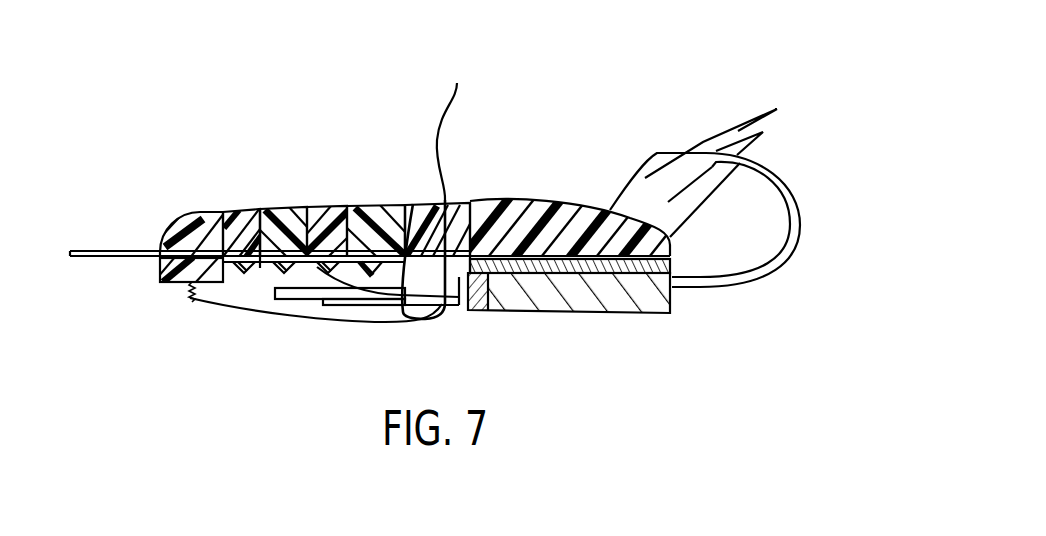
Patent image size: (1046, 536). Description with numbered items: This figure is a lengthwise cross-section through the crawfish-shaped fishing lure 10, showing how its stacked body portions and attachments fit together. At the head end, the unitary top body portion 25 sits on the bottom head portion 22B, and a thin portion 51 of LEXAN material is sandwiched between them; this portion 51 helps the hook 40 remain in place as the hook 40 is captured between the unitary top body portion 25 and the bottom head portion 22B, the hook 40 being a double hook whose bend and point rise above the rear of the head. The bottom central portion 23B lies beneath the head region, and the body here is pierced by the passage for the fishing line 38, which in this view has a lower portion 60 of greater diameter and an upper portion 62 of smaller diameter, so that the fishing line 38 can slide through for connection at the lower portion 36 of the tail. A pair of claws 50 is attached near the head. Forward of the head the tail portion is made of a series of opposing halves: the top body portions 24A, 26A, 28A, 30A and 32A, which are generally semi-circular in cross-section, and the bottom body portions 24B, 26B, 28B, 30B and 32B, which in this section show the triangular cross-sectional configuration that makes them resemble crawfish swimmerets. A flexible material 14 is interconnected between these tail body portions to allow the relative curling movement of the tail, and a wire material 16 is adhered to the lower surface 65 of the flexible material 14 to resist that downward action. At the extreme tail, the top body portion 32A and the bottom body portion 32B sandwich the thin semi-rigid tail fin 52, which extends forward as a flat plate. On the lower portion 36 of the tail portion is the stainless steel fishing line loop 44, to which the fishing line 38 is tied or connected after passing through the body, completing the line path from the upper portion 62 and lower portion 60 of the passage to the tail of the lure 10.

The fishing lure 10 is at (659, 62).
The flexible material 14 is at (270, 212).
The wire material 16 is at (258, 268).
The bottom head portion 22B is at (616, 285).
The bottom central portion 23B is at (482, 292).
The top body portion 24A is at (390, 200).
The bottom body portion 24B is at (374, 276).
The unitary top body portion 25 is at (548, 200).
The top body portion 26A is at (341, 200).
The bottom body portion 26B is at (326, 270).
The top body portion 28A is at (299, 203).
The bottom body portion 28B is at (283, 272).
The top body portion 30A is at (247, 220).
The bottom body portion 30B is at (238, 264).
The top body portion 32A is at (193, 225).
The bottom body portion 32B is at (159, 271).
The lower portion 36 is at (188, 298).
The fishing line 38 is at (462, 113).
The hook 40 is at (795, 203).
The fishing line loop 44 is at (190, 302).
The claws 50 is at (741, 128).
The portion 51 is at (655, 266).
The tail fin 52 is at (92, 250).
The lower portion of the passage 60 is at (458, 275).
The upper portion of the passage 62 is at (450, 199).
The lower surface 65 is at (362, 300).